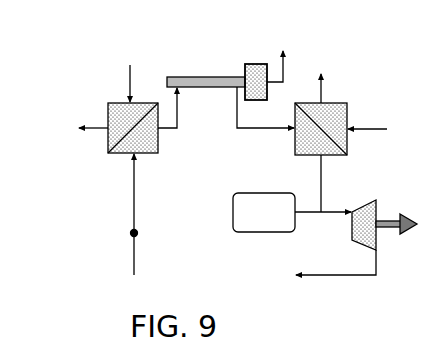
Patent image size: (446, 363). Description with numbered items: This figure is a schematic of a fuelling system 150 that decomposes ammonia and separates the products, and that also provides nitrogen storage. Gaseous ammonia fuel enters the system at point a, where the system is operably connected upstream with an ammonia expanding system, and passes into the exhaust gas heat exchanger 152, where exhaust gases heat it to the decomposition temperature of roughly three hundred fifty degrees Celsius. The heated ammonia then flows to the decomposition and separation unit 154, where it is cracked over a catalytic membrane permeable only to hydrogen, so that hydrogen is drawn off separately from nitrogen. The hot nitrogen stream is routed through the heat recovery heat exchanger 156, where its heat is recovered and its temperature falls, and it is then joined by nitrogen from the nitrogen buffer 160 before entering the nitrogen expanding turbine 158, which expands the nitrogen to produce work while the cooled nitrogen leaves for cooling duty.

The fuelling system 150 is at (96, 181).
The exhaust gas heat exchanger 152 is at (107, 133).
The decomposition and separation unit 154 is at (177, 77).
The heat recovery heat exchanger 156 is at (337, 155).
The nitrogen expanding turbine 158 is at (380, 240).
The nitrogen buffer 160 is at (288, 224).